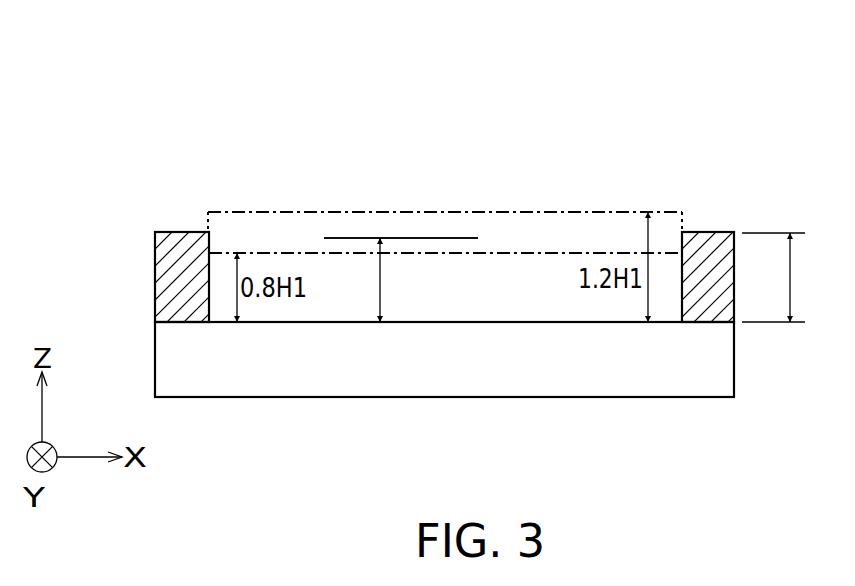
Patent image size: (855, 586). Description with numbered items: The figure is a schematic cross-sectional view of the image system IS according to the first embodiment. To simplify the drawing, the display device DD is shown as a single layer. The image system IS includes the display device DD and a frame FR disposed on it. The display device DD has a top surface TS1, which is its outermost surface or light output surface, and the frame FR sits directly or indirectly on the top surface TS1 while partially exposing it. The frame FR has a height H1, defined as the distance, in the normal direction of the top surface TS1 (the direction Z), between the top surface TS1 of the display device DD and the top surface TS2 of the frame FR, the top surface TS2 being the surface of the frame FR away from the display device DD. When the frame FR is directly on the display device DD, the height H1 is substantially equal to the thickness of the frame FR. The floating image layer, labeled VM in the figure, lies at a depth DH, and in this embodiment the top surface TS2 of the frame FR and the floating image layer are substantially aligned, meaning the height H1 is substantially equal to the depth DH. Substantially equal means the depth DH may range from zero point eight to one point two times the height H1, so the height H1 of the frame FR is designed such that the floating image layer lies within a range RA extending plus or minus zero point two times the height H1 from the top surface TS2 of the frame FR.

The image system IS is at (160, 98).
The range RA is at (262, 220).
The vibration member VM is at (445, 238).
The frame FR is at (175, 257).
The top surface TS1 is at (567, 322).
The top surface TS2 is at (703, 232).
The display device DD is at (473, 367).
The depth DH is at (357, 280).
The height H1 is at (773, 277).